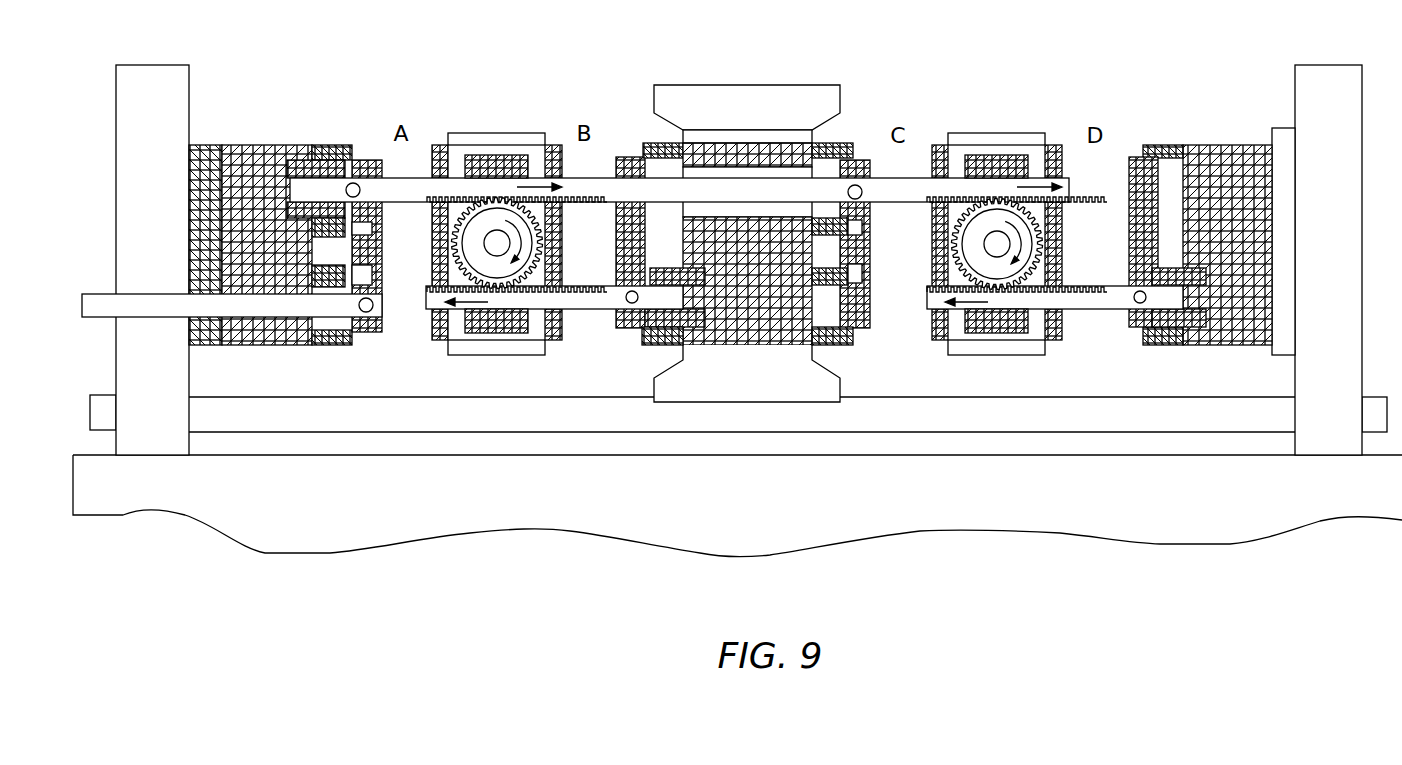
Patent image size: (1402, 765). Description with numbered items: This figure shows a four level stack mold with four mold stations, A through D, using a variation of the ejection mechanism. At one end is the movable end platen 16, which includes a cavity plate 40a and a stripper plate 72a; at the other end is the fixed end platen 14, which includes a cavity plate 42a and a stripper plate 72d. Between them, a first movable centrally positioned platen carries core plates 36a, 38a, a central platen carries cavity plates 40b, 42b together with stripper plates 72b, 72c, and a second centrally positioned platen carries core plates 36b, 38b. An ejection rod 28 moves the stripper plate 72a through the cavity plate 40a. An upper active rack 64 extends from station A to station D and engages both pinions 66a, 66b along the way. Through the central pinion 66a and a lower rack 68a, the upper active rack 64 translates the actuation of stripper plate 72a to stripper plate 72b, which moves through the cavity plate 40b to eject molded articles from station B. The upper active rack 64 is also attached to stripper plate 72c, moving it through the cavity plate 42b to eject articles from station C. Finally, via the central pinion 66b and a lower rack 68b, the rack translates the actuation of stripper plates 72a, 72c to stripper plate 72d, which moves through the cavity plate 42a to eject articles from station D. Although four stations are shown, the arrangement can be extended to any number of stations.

The fixed end platen 14 is at (1338, 77).
The movable end platen 16 is at (147, 72).
The ejection rod 28 is at (157, 318).
The core plate 36a is at (440, 343).
The core plate 38a is at (553, 343).
The core plate 36b is at (940, 343).
The core plate 38b is at (1052, 343).
The cavity plate 40a is at (325, 146).
The cavity plate 40b is at (662, 147).
The cavity plate 42a is at (1163, 146).
The cavity plate 42b is at (838, 143).
The upper active rack 64 is at (604, 182).
The central pinion 66a is at (482, 200).
The central pinion 66b is at (988, 205).
The lower rack 68a is at (578, 303).
The lower rack 68b is at (1091, 303).
The stripper plate 72a is at (368, 163).
The stripper plate 72b is at (630, 158).
The stripper plate 72c is at (865, 330).
The stripper plate 72d is at (1129, 172).